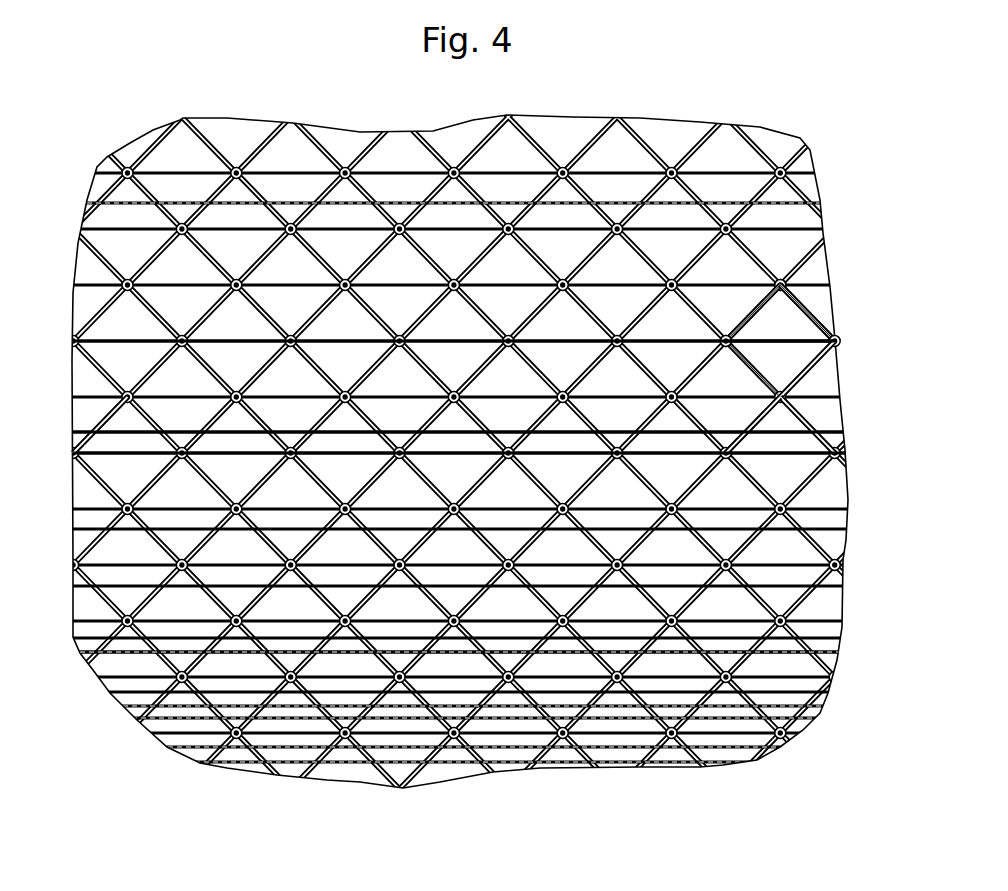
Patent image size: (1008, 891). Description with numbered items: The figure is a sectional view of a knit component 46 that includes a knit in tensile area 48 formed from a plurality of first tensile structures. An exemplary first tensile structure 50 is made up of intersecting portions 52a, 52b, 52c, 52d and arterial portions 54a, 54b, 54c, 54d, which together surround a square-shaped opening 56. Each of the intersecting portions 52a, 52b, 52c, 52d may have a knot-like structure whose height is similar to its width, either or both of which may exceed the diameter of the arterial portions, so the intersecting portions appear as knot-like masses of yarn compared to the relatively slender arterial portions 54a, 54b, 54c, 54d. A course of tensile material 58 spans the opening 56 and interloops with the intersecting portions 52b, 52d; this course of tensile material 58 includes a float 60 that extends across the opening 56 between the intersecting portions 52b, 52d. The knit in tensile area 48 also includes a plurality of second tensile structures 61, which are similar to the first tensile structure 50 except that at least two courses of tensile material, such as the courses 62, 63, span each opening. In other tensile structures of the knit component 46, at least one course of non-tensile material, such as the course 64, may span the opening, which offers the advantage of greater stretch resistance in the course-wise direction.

The knit component 46 is at (130, 130).
The knit in tensile area 48 is at (655, 107).
The first tensile structure 50 is at (816, 300).
The intersecting portion 52a is at (787, 283).
The intersecting portion 52b is at (836, 343).
The intersecting portion 52c is at (810, 425).
The intersecting portion 52d is at (727, 340).
The arterial portion 54a is at (815, 313).
The arterial portion 54b is at (818, 367).
The arterial portion 54c is at (772, 393).
The arterial portion 54d is at (767, 297).
The opening 56 is at (771, 333).
The course of tensile material 58 is at (123, 340).
The float 60 is at (764, 343).
The second tensile structure 61 is at (110, 420).
The course of tensile material 62 is at (122, 433).
The course of tensile material 63 is at (113, 456).
The course of non-tensile material 64 is at (130, 655).